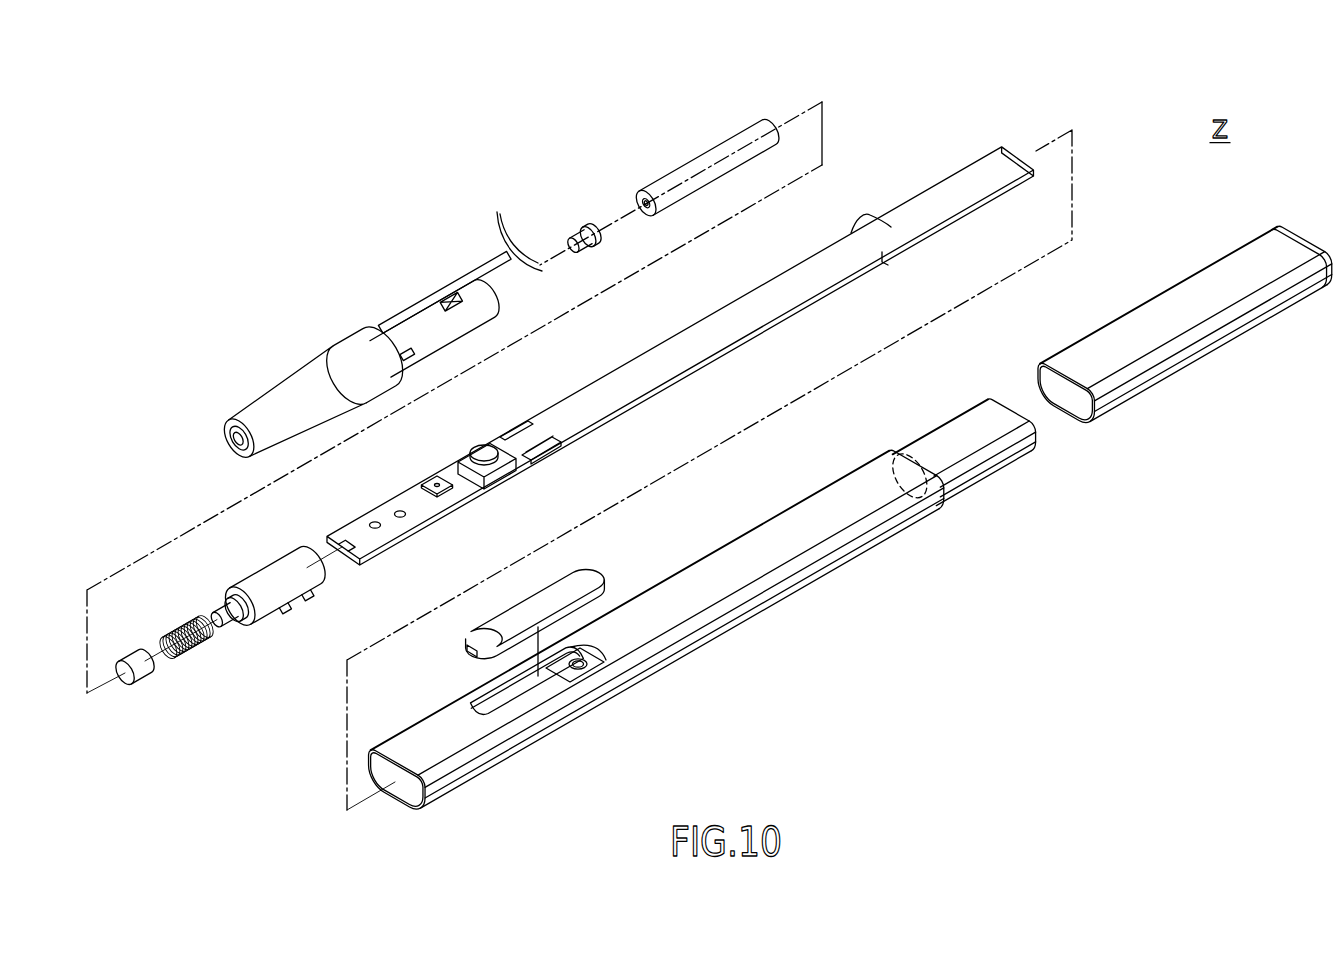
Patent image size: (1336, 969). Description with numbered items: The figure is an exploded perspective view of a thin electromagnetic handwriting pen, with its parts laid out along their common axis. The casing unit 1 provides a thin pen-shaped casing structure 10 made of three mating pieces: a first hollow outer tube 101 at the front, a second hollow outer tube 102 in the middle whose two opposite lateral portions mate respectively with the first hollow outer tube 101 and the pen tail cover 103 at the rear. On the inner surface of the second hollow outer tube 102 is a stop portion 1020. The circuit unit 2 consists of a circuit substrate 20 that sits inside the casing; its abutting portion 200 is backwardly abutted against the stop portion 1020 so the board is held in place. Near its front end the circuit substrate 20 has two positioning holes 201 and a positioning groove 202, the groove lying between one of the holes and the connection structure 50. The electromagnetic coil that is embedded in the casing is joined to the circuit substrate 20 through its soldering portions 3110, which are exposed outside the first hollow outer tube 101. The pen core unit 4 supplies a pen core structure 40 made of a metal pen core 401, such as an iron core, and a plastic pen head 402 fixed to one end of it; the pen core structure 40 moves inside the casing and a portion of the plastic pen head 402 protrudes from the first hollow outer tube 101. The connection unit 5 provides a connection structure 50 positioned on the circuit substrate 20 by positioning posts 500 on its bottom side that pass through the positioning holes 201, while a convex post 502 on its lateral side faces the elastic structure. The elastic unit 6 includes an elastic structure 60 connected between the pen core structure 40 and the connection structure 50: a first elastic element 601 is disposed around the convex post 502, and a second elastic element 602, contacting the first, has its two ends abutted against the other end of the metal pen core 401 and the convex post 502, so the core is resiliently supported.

The casing unit 1 is at (233, 285).
The thin pen-shaped casing structure 10 is at (246, 381).
The first hollow outer tube 101 is at (295, 406).
The second hollow outer tube 102 is at (731, 568).
The pen tail cover 103 is at (1185, 308).
The stop portion 1020 is at (905, 478).
The circuit unit 2 is at (914, 82).
The circuit substrate 20 is at (928, 182).
The abutting portion 200 is at (886, 260).
The positioning holes 201 is at (399, 511).
The positioning groove 202 is at (352, 566).
The soldering portion 3110 is at (497, 213).
The pen core unit 4 is at (606, 77).
The pen core structure 40 is at (650, 103).
The metal pen core 401 is at (672, 178).
The plastic pen head 402 is at (580, 228).
The connection unit 5 is at (189, 469).
The connection structure 50 is at (256, 574).
The positioning posts 500 is at (307, 582).
The convex post 502 is at (248, 617).
The elastic unit 6 is at (194, 808).
The elastic structure 60 is at (198, 745).
The first elastic element 601 is at (203, 646).
The second elastic element 602 is at (155, 686).